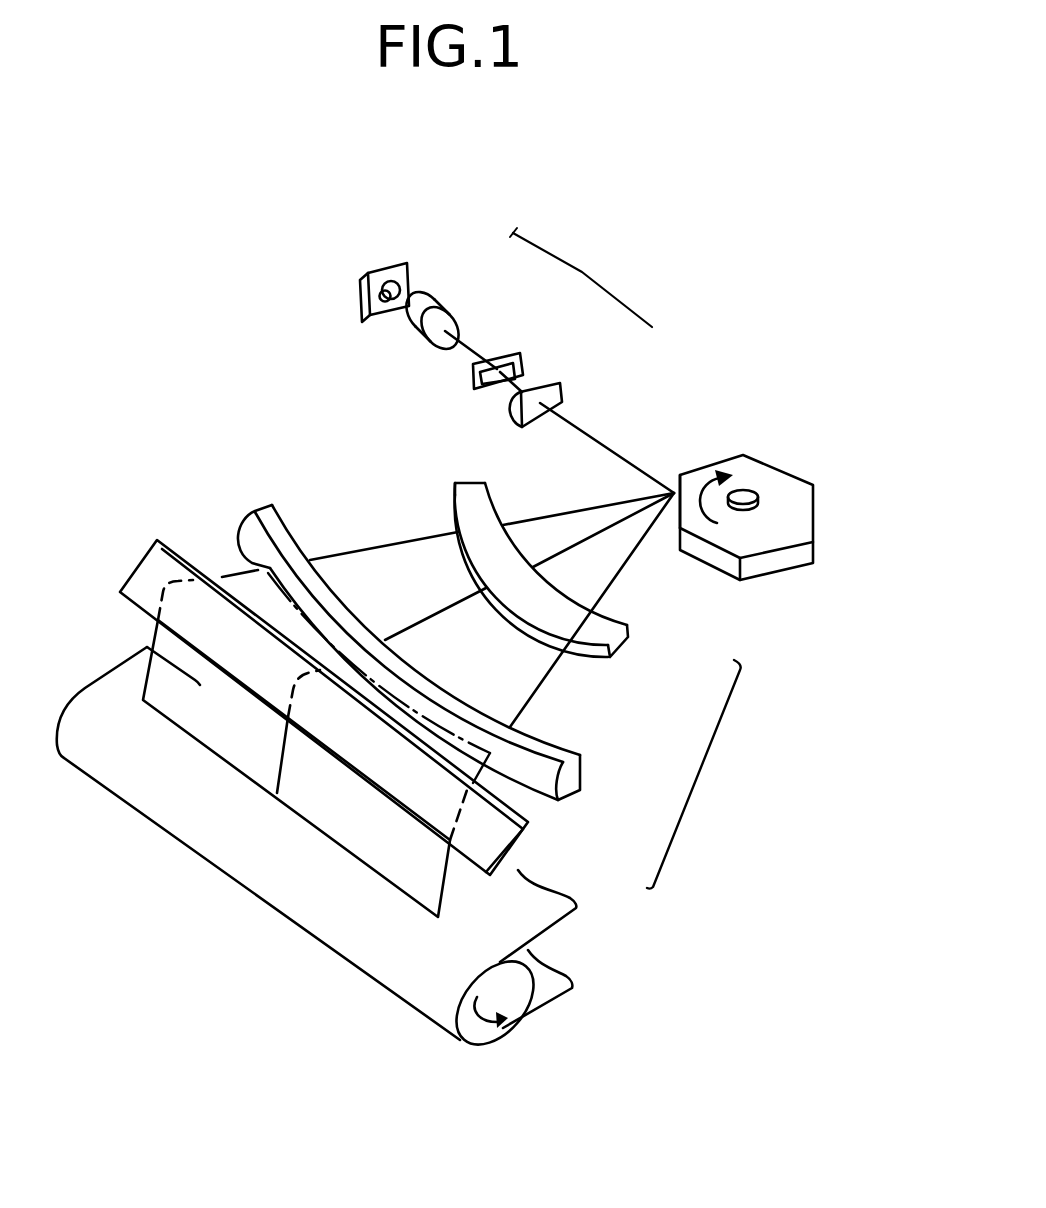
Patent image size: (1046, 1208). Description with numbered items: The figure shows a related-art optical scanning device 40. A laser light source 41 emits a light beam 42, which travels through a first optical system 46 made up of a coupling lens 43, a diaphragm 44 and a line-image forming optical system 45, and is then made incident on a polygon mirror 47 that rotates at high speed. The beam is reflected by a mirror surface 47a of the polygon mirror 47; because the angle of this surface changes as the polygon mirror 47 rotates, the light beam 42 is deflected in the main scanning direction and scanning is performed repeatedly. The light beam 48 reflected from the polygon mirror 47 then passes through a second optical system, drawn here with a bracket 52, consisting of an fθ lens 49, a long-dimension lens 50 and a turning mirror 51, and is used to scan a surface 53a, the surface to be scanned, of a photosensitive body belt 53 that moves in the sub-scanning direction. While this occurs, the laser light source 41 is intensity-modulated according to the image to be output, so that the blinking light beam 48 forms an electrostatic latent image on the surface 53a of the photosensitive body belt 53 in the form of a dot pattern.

The optical scanning device 40 is at (128, 280).
The laser light source 41 is at (367, 270).
The light beam 42 is at (412, 302).
The coupling lens 43 is at (447, 303).
The diaphragm 44 is at (520, 343).
The line-image forming optical system 45 is at (558, 380).
The first optical system 46 is at (585, 263).
The polygon mirror 47 is at (765, 478).
The mirror surface 47a is at (676, 484).
The light beam 48 is at (622, 570).
The fθ lens 49 is at (610, 657).
The long-dimension lens 50 is at (585, 768).
The turning mirror 51 is at (525, 843).
The scanning optical system 52 is at (697, 783).
The photosensitive body belt 53 is at (288, 933).
The surface 53a is at (543, 917).